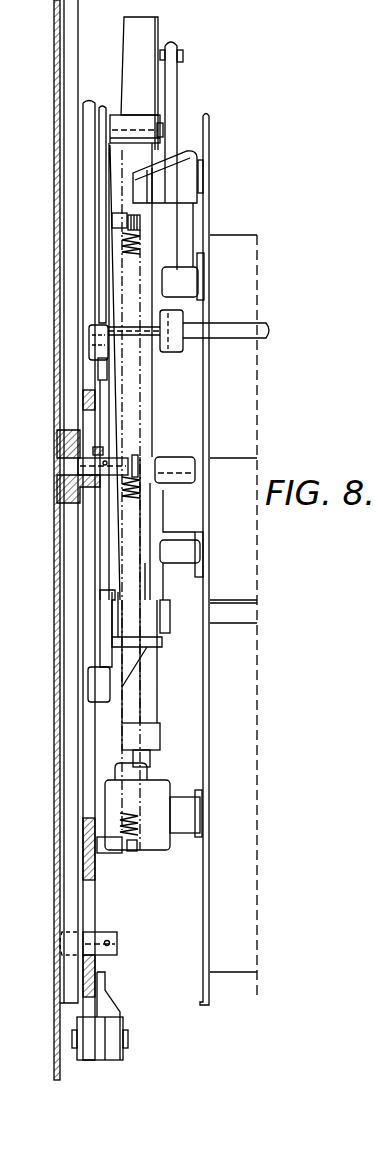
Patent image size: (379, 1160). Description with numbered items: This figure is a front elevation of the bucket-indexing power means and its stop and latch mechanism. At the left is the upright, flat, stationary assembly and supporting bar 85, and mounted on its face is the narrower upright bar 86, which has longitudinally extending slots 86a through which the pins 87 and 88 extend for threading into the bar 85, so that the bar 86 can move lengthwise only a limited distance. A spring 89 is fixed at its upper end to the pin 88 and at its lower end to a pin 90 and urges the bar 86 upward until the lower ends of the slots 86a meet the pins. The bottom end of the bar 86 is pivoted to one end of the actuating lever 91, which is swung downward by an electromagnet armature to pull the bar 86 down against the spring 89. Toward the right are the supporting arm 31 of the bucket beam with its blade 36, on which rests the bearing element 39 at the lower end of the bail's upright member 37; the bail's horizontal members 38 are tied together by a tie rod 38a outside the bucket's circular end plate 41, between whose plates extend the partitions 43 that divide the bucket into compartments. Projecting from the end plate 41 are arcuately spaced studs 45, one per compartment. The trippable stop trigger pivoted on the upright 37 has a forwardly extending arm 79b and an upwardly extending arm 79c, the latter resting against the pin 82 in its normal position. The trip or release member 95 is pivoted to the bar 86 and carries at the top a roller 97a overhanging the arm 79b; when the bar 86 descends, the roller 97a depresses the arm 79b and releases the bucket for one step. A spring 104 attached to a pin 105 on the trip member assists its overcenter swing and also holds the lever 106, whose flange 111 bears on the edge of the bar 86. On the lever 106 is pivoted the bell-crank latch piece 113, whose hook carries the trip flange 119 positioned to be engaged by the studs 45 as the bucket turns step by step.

The assembly and supporting bar 85 is at (68, 26).
The upright bar 86 is at (88, 155).
The trip or release member 95 is at (105, 190).
The upright member 37 is at (122, 37).
The roller 97a is at (132, 117).
The pin 82 is at (180, 54).
The upwardly extending arm 79c is at (176, 73).
The forwardly extending arm 79b is at (165, 181).
The circular end plate 41 is at (210, 212).
The partition 43 is at (245, 444).
The stud 45 is at (185, 285).
The pin 105 is at (113, 220).
The spring 104 is at (124, 248).
The tie rod 38a is at (266, 330).
The horizontal member 38 is at (168, 352).
The slot 86a is at (88, 412).
The trip flange 119 is at (178, 460).
The pin 88 is at (90, 463).
The spring 89 is at (123, 487).
The lever 106 is at (104, 613).
The flange 111 is at (90, 688).
The latch piece 113 is at (125, 631).
The bearing element 39 is at (157, 757).
The blade 36 is at (155, 773).
The supporting arm 31 is at (163, 851).
The pin 90 is at (97, 843).
The pin 87 is at (85, 940).
The actuating lever 91 is at (102, 1060).